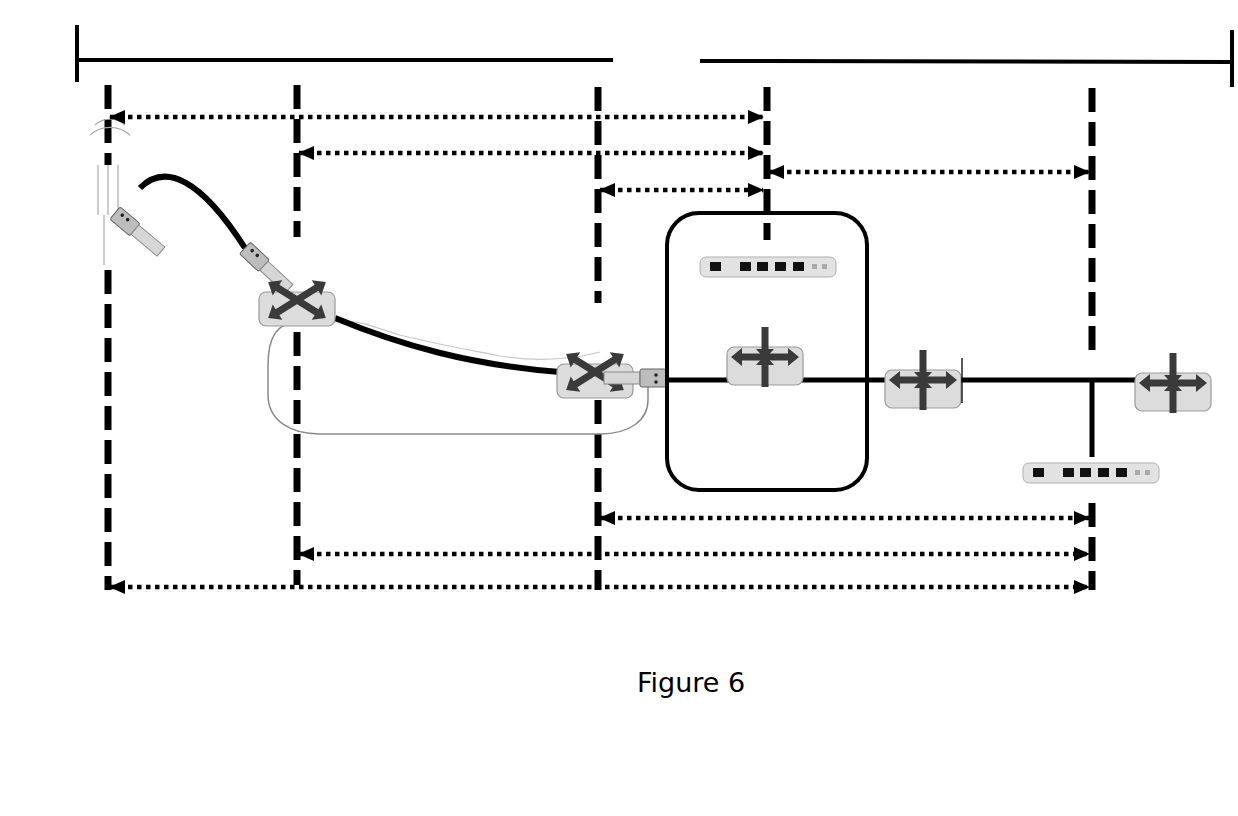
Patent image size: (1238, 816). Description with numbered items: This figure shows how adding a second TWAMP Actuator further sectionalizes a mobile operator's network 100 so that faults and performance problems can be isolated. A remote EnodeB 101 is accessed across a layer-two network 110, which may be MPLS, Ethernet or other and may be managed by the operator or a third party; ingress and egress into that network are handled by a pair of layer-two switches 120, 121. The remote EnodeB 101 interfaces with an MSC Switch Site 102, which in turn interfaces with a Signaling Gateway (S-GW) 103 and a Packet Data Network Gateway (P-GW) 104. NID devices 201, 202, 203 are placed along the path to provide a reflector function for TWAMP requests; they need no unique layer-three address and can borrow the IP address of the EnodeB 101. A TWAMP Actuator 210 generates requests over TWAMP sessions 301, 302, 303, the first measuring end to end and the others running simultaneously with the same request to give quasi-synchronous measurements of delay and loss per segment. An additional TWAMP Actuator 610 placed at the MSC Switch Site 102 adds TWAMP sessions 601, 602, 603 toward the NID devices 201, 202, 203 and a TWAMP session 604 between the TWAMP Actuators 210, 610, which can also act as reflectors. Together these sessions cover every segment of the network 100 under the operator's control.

The network 100 is at (654, 56).
The remote EnodeB 101 is at (89, 337).
The MSC Switch Site 102 is at (793, 351).
The Signaling Gateway (S-GW) 103 is at (923, 341).
The Packet Data Network Gateway (P-GW) 104 is at (1173, 340).
The network (MPLS, Ethernet or other) 110 is at (458, 332).
The layer-2 switch 120 is at (267, 300).
The layer-2 switch 121 is at (603, 352).
The NID device 201 is at (158, 207).
The NID device 202 is at (254, 240).
The NID device 203 is at (639, 397).
The TWAMP Actuator 210 is at (1127, 470).
The TWAMP session 301 is at (236, 590).
The TWAMP session 302 is at (407, 557).
The TWAMP session 303 is at (752, 522).
The TWAMP session 601 is at (245, 107).
The TWAMP session 602 is at (410, 146).
The TWAMP session 603 is at (708, 186).
The TWAMP session 604 is at (891, 161).
The TWAMP Actuator 610 is at (832, 244).